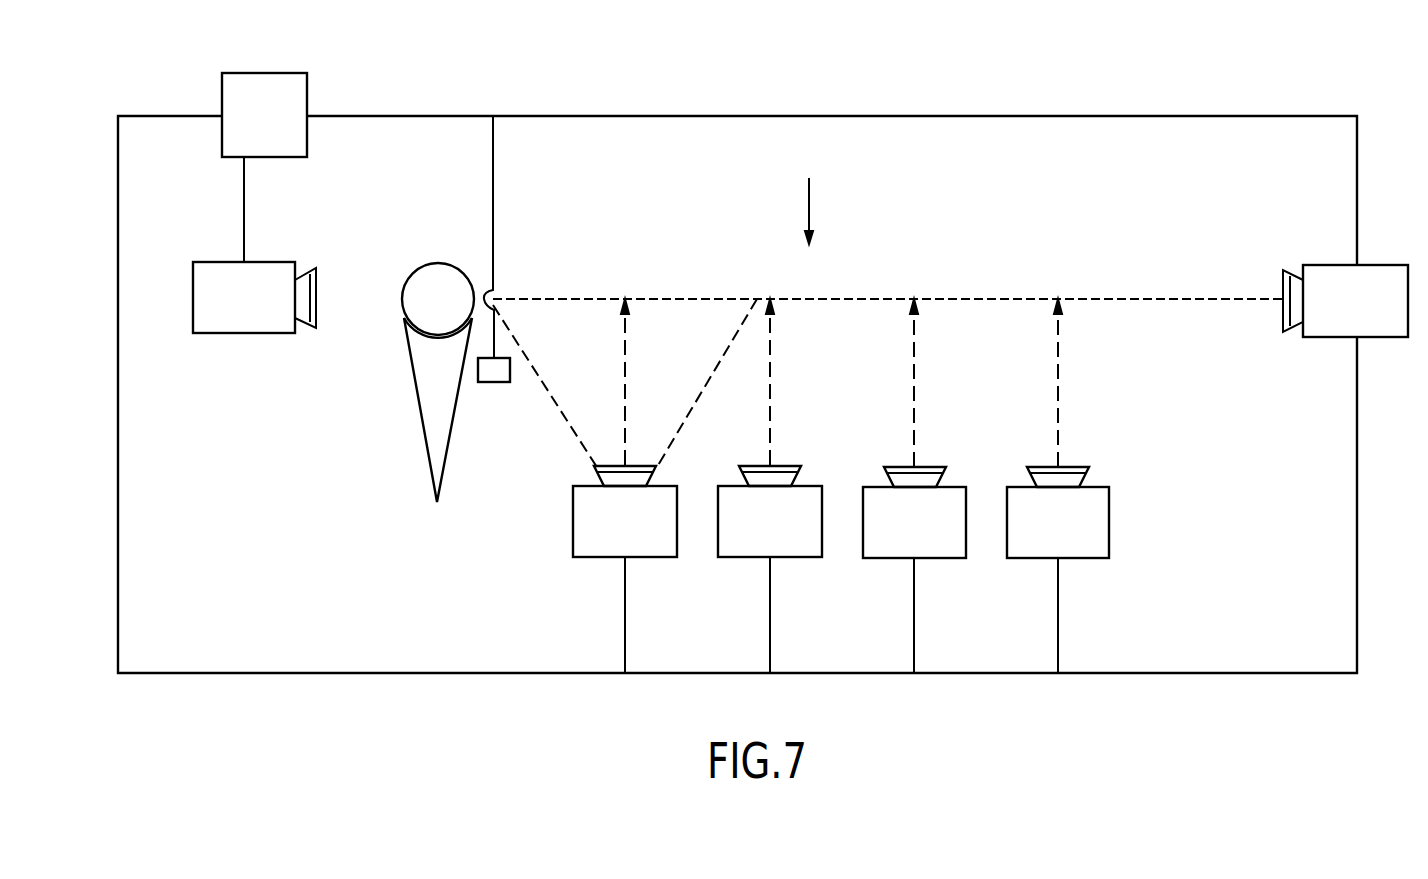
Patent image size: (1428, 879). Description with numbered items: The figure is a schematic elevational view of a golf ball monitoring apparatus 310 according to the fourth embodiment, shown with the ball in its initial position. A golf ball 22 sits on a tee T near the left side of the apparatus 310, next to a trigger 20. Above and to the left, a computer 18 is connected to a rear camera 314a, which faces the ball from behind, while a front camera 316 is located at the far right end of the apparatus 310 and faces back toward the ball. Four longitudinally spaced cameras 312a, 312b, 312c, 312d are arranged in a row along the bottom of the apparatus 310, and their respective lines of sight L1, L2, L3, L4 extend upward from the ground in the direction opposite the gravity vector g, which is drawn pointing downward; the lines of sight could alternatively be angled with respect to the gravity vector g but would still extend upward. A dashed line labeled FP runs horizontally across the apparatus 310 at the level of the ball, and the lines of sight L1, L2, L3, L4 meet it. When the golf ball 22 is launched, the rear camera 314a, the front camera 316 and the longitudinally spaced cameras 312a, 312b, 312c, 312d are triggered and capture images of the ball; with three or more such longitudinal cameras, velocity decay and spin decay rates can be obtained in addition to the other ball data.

The computer 18 is at (307, 82).
The rear camera 314a is at (282, 262).
The golf ball 22 is at (441, 263).
The tee T is at (409, 355).
The trigger 20 is at (510, 368).
The apparatus 310 is at (915, 133).
The focal plane FP is at (883, 299).
The gravity vector g is at (823, 211).
The line of sight L1 is at (625, 345).
The line of sight L2 is at (770, 362).
The line of sight L3 is at (914, 360).
The line of sight L4 is at (1058, 360).
The longitudinally spaced camera 312a is at (660, 557).
The longitudinally spaced camera 312b is at (805, 557).
The longitudinally spaced camera 312c is at (949, 558).
The longitudinally spaced camera 312d is at (1093, 558).
The front camera 316 is at (1333, 265).